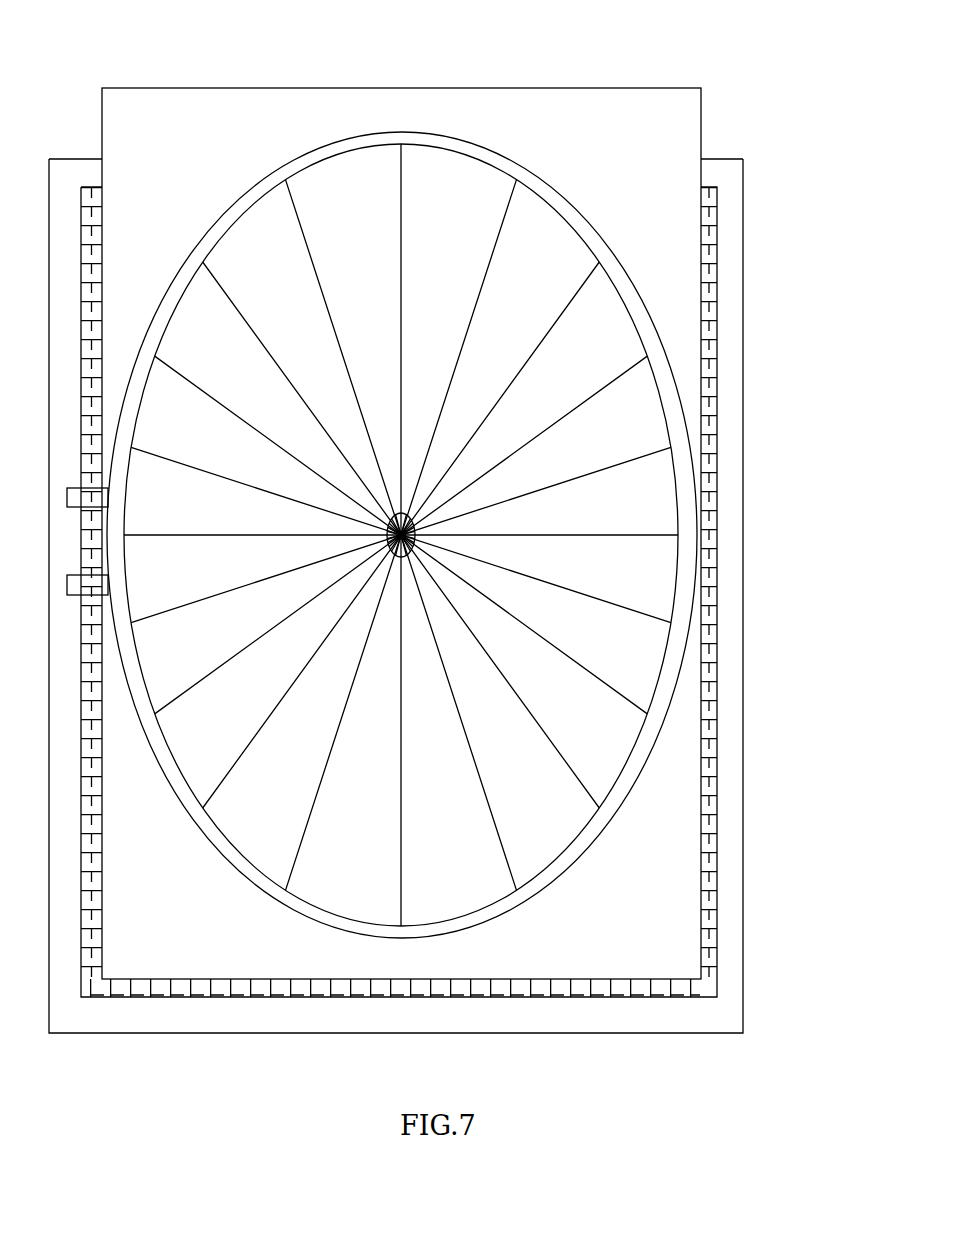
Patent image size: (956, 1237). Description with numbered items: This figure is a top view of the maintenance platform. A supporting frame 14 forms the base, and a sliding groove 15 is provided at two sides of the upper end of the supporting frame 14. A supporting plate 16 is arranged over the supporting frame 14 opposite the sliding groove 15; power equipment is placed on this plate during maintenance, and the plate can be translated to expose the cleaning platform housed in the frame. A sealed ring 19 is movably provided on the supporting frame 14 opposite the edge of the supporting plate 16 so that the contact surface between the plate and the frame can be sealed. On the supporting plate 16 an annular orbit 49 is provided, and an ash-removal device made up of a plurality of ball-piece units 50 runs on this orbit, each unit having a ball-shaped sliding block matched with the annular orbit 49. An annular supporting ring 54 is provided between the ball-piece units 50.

The supporting frame 14 is at (725, 175).
The supporting plate 16 is at (375, 100).
The sealed ring 19 is at (710, 668).
The sliding groove 15 is at (715, 453).
The annular orbit 49 is at (446, 130).
The ball-piece unit 50 is at (540, 215).
The annular supporting ring 54 is at (393, 513).